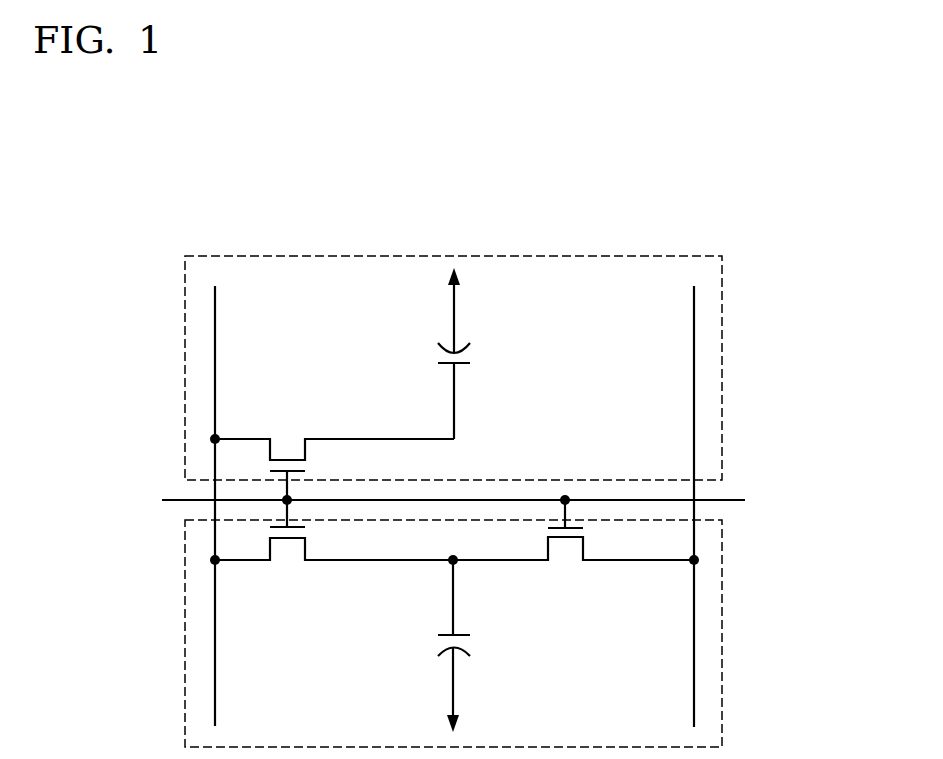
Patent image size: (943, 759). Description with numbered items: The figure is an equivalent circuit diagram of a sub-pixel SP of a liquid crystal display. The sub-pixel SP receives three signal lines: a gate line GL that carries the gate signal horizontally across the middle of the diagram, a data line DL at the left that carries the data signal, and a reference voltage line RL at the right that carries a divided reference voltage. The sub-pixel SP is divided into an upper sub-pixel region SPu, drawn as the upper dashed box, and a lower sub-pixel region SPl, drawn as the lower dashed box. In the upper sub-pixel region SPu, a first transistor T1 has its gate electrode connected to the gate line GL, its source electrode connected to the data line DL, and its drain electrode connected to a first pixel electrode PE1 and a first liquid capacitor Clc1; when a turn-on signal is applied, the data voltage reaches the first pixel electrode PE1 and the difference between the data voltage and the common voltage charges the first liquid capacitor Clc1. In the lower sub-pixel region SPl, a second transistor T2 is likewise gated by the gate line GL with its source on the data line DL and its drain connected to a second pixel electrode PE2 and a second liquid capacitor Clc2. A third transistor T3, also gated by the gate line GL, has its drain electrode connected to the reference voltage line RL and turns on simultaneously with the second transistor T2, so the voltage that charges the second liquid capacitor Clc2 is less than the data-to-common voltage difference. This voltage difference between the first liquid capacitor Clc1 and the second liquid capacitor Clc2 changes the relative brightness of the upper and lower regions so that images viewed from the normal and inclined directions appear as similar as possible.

The sub-pixel SP is at (746, 229).
The upper sub-pixel region SPu is at (722, 368).
The lower sub-pixel region SPl is at (723, 633).
The data line DL is at (217, 494).
The reference voltage line RL is at (695, 494).
The gate line GL is at (438, 500).
The first transistor T1 is at (332, 452).
The second transistor T2 is at (331, 546).
The third transistor T3 is at (576, 546).
The first pixel electrode PE1 is at (465, 365).
The second pixel electrode PE2 is at (468, 635).
The first liquid capacitor Clc1 is at (479, 310).
The second liquid capacitor Clc2 is at (479, 690).